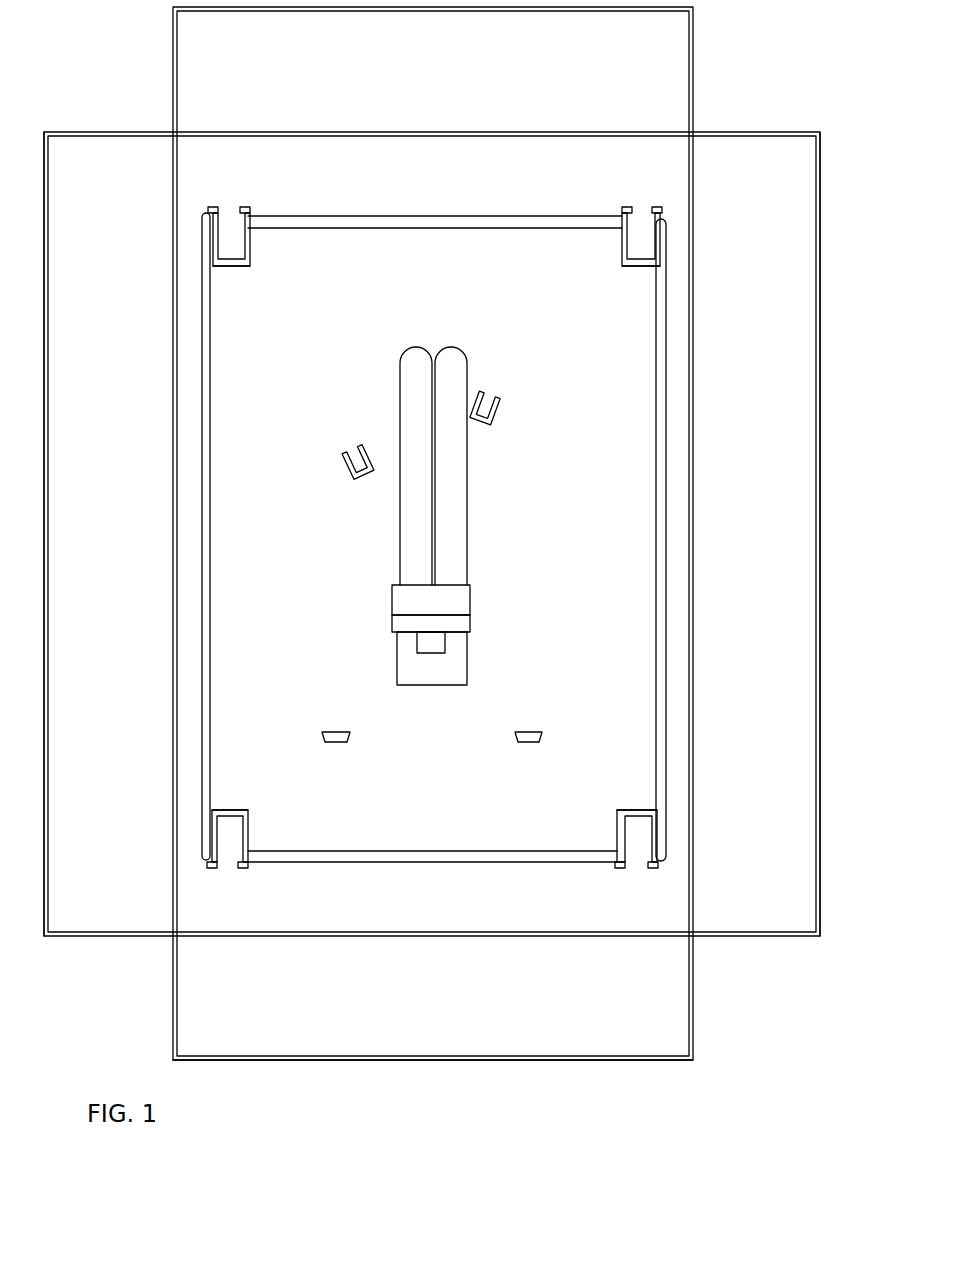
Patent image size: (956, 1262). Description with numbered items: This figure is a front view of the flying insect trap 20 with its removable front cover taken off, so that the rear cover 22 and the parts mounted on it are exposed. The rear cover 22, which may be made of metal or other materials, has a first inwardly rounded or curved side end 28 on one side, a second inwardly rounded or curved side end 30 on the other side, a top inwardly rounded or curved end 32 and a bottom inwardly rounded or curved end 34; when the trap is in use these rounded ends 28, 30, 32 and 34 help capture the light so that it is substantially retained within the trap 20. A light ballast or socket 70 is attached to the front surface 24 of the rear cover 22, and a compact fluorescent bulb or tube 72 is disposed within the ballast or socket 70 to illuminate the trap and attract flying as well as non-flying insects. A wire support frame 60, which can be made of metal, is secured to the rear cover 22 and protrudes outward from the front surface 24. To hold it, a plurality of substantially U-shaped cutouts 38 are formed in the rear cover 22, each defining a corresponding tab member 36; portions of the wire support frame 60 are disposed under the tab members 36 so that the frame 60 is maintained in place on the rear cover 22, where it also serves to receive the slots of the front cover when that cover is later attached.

The insect trap 20 is at (748, 90).
The rear cover 22 is at (448, 189).
The front surface 24 is at (675, 168).
The first inwardly rounded or curved side end 28 is at (102, 905).
The second inwardly rounded or curved side end 30 is at (752, 913).
The top inwardly rounded or curved end 32 is at (205, 66).
The bottom inwardly rounded or curved end 34 is at (565, 1035).
The tab member 36 is at (228, 218).
The cutout 38 is at (246, 266).
The wire support frame 60 is at (205, 642).
The light ballast or socket 70 is at (458, 660).
The compact fluorescent bulb or tube 72 is at (458, 525).